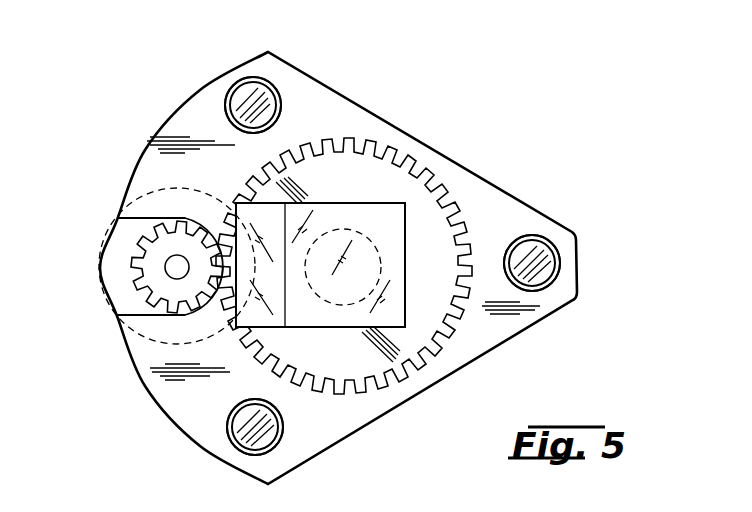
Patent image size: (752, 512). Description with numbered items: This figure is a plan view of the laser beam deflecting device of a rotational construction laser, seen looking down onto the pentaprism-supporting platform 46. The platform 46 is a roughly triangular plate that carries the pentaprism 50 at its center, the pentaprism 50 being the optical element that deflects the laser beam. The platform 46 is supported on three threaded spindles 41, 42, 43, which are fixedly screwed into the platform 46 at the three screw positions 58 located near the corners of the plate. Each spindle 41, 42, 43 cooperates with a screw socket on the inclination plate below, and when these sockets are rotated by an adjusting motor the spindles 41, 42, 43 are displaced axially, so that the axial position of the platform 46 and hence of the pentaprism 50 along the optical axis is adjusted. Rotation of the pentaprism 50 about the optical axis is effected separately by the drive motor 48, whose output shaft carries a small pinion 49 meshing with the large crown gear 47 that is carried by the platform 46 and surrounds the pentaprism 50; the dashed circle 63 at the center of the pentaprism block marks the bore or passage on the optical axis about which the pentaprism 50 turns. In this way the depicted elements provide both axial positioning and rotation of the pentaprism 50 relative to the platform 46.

The threaded spindle 41 is at (528, 250).
The threaded spindle 42 is at (245, 98).
The threaded spindle 43 is at (270, 435).
The pentaprism-supporting platform 46 is at (388, 122).
The crown gear 47 is at (412, 166).
The drive motor 48 is at (120, 290).
The pinion gear 49 is at (140, 247).
The pentaprism 50 is at (342, 210).
The screw position 58 is at (278, 82).
The bore 63 is at (345, 305).